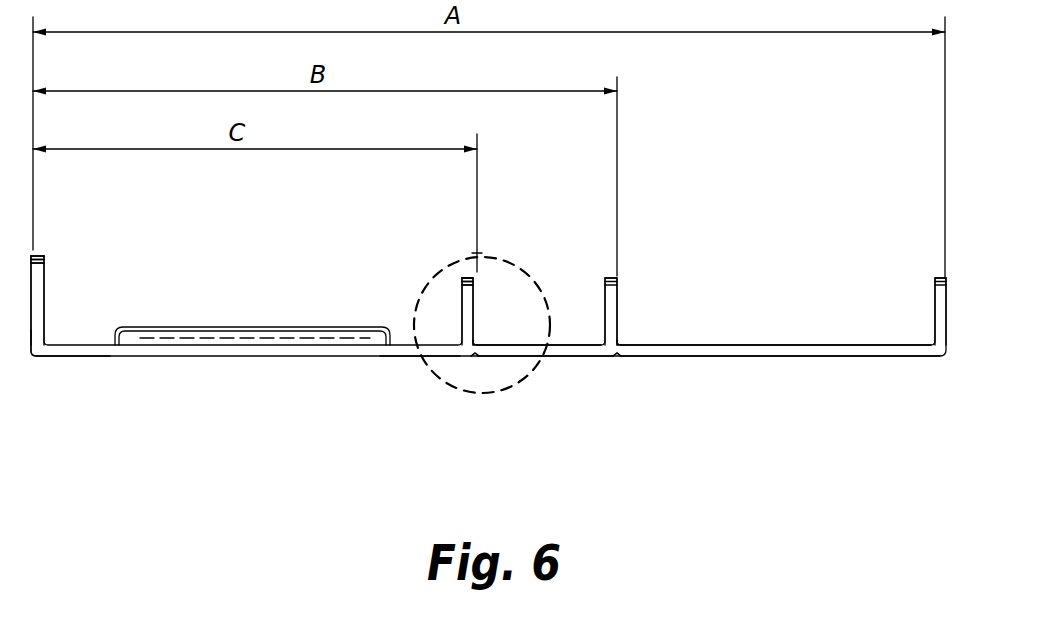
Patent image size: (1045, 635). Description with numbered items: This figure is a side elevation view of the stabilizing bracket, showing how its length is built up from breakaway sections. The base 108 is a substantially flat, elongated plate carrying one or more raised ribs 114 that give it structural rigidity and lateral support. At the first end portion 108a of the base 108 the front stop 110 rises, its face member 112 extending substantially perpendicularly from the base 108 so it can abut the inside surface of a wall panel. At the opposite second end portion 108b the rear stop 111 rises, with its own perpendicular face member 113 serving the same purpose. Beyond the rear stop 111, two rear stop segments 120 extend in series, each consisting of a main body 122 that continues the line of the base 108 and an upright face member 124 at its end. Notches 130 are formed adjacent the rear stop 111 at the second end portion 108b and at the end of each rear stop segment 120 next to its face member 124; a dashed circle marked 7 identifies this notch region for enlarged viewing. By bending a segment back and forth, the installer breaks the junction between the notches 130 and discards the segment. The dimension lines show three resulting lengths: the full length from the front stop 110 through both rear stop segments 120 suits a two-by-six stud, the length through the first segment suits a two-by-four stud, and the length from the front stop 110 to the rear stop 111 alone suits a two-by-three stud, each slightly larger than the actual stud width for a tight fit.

The base 108 is at (186, 364).
The first end portion of the base 108a is at (69, 358).
The second end portion of the base 108b is at (406, 358).
The front stop 110 is at (40, 243).
The face member 112 is at (46, 291).
The raised ribs 114 is at (210, 335).
The rear stop 111 is at (466, 265).
The face member 113 is at (461, 322).
The notches 130 is at (480, 342).
The face member 124 is at (618, 292).
The main body 122 is at (563, 344).
The rear stop segments 120 is at (556, 378).
The detail callout for FIG. 7 is at (546, 274).